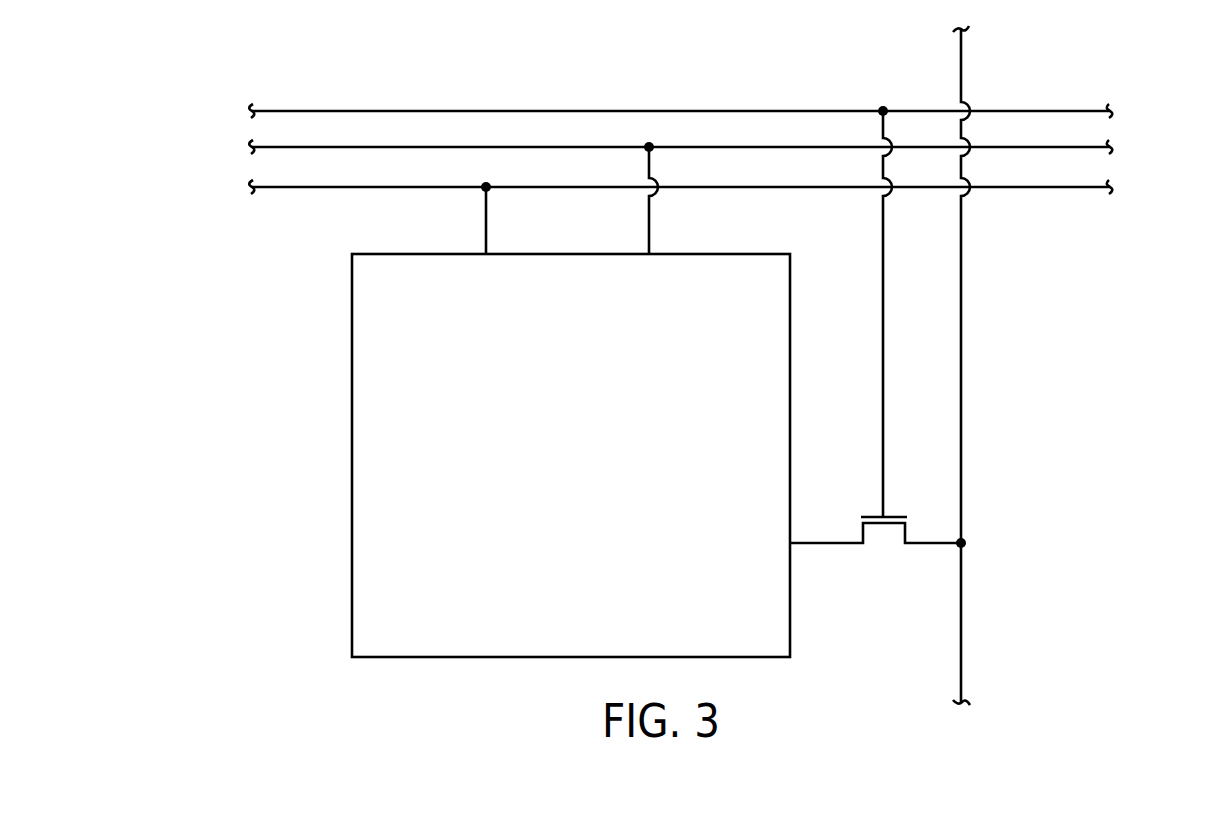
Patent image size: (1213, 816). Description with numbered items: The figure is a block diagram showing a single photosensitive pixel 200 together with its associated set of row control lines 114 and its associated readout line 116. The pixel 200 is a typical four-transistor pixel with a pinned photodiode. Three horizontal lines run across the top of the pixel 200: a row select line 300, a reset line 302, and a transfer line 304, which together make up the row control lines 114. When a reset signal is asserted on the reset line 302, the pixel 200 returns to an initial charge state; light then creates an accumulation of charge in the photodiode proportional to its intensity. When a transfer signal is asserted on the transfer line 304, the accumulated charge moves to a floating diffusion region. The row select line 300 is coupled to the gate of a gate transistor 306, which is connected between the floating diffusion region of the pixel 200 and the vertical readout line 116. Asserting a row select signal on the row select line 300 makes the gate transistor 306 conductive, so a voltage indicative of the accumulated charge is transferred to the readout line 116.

The row control lines 114 is at (191, 103).
The row select line 300 is at (1108, 107).
The reset line 302 is at (1108, 144).
The transfer line 304 is at (1108, 184).
The readout line 116 is at (961, 445).
The photosensitive pixel 200 is at (403, 657).
The gate transistor 306 is at (876, 515).